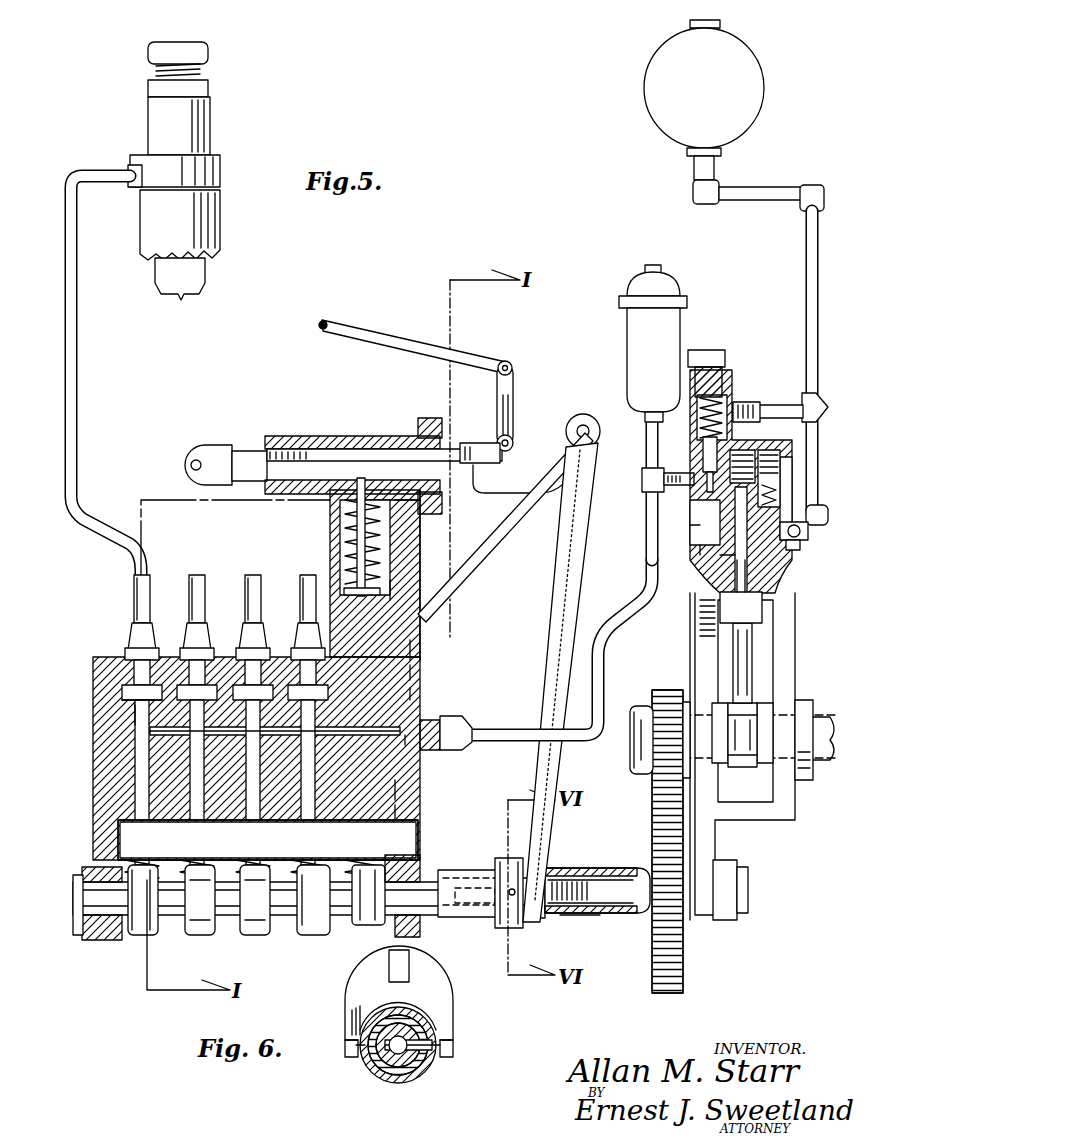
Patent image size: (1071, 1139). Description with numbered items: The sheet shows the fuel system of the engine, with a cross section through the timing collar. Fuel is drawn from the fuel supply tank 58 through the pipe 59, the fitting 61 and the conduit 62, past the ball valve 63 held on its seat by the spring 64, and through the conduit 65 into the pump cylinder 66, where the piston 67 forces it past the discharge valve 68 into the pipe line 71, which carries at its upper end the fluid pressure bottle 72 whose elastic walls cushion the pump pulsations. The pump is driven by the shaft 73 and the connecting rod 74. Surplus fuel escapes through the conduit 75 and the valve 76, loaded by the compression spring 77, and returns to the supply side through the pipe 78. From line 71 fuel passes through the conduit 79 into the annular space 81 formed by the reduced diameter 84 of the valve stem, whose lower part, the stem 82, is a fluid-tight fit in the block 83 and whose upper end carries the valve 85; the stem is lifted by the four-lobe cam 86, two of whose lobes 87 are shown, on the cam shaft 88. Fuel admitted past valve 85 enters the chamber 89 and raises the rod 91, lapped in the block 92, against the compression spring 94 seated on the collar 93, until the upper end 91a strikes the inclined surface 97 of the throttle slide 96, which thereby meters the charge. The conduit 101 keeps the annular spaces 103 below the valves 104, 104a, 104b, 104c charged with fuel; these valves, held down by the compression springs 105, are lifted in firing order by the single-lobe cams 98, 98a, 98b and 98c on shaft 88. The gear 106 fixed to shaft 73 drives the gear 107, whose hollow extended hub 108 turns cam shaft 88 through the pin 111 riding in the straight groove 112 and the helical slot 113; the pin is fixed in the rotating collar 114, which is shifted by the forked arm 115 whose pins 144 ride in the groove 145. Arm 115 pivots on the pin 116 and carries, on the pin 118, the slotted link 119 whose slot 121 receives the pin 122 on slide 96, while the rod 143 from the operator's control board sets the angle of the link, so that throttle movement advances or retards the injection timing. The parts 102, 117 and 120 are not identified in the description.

In FIG. 5, the fuel supply tank 58 is at (704, 100).
In FIG. 5, the pipe 59 is at (806, 290).
In FIG. 5, the fitting 61 is at (808, 550).
In FIG. 5, the conduit 62 is at (810, 537).
In FIG. 5, the ball valve 63 is at (780, 505).
In FIG. 5, the spring 64 is at (780, 475).
In FIG. 5, the conduit 65 is at (700, 550).
In FIG. 5, the pump cylinder 66 is at (740, 515).
In FIG. 5, the piston 67 is at (720, 560).
In FIG. 5, the discharge valve 68 is at (695, 530).
In FIG. 5, the pipe line 71 is at (645, 452).
In FIG. 5, the fluid pressure bottle 72 is at (653, 343).
In FIG. 5, the shaft 73 is at (820, 715).
In FIG. 5, the connecting rod 74 is at (742, 655).
In FIG. 5, the conduit 75 is at (722, 446).
In FIG. 5, the valve 76 is at (686, 470).
In FIG. 5, the compression spring 77 is at (697, 415).
In FIG. 5, the pipe 78 is at (770, 404).
In FIG. 5, the conduit 79 is at (420, 718).
In FIG. 5, the annular space 81 is at (410, 745).
In FIG. 5, the stem 82 is at (400, 795).
In FIG. 5, the block 83 is at (400, 815).
In FIG. 5, the reduced diameter of the valve stem 84 is at (420, 690).
In FIG. 5, the valve 85 is at (420, 668).
In FIG. 5, the cam 86 is at (420, 860).
In FIG. 5, the lobes 87 is at (365, 925).
In FIG. 5, the cam shaft 88 is at (275, 912).
In FIG. 6, the cam shaft 88 is at (415, 1068).
In FIG. 5, the chamber 89 is at (420, 645).
In FIG. 5, the rod 91 is at (420, 605).
In FIG. 5, the upper end of the stem 91a is at (415, 510).
In FIG. 5, the block 92 is at (395, 590).
In FIG. 5, the collar 93 is at (395, 560).
In FIG. 5, the compression spring 94 is at (345, 520).
In FIG. 5, the slide 96 is at (240, 445).
In FIG. 5, the inclined surface 97 is at (335, 480).
In FIG. 5, the cam 98 is at (310, 935).
In FIG. 5, the cam 98a is at (255, 935).
In FIG. 5, the cam 98b is at (205, 935).
In FIG. 5, the cam 98c is at (150, 935).
In FIG. 5, the conduit 101 is at (315, 727).
In FIG. 5, the plunger 102 is at (135, 725).
In FIG. 5, the annular spaces 103 is at (130, 700).
In FIG. 5, the valve 104 is at (295, 660).
In FIG. 5, the valve 104a is at (239, 660).
In FIG. 5, the outlet fitting 104b is at (183, 660).
In FIG. 5, the outlet fitting 104c is at (128, 660).
In FIG. 5, the compression springs 105 is at (115, 835).
In FIG. 5, the gear 106 is at (670, 690).
In FIG. 5, the gear 107 is at (680, 960).
In FIG. 5, the hollow extended hub 108 is at (580, 905).
In FIG. 6, the hollow extended hub 108 is at (400, 1075).
In FIG. 5, the pin 111 is at (510, 858).
In FIG. 6, the pin 111 is at (395, 1070).
In FIG. 5, the straight groove 112 is at (570, 930).
In FIG. 5, the helical slot 113 is at (470, 920).
In FIG. 5, the rotating collar 114 is at (542, 915).
In FIG. 6, the rotating collar 114 is at (370, 1065).
In FIG. 5, the forked arm 115 is at (558, 598).
In FIG. 6, the forked arm 115 is at (395, 985).
In FIG. 5, the pin 116 is at (600, 413).
In FIG. 5, the arm 117 is at (530, 535).
In FIG. 5, the pin 118 is at (497, 438).
In FIG. 5, the slotted link 119 is at (500, 388).
In FIG. 5, the pivot 120 is at (508, 362).
In FIG. 5, the slot 121 is at (480, 490).
In FIG. 5, the pin 122 is at (465, 445).
In FIG. 5, the rod 143 is at (395, 340).
In FIG. 5, the pins 144 is at (550, 870).
In FIG. 6, the pins 144 is at (356, 1050).
In FIG. 5, the groove 145 is at (525, 920).